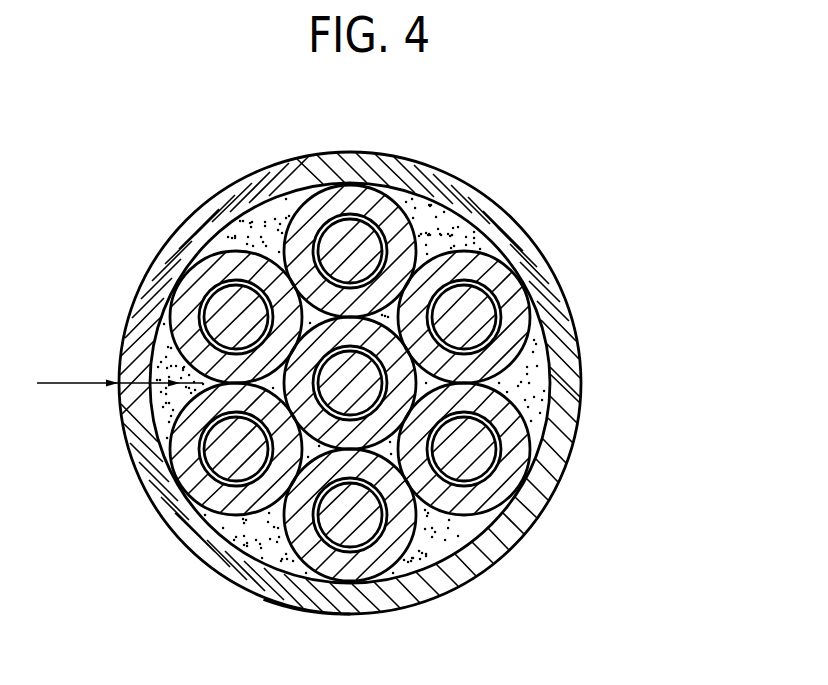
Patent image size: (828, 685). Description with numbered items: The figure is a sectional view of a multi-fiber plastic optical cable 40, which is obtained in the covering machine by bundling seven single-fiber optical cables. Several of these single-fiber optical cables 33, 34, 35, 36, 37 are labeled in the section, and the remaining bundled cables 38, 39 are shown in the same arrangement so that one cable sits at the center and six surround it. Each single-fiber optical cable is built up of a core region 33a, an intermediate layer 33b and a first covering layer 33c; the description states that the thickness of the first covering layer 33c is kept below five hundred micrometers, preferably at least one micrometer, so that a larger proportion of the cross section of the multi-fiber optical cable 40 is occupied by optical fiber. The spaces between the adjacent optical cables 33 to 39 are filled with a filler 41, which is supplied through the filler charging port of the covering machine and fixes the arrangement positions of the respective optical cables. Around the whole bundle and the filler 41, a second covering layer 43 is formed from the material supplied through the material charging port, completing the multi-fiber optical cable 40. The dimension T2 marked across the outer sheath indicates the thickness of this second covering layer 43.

The multi-fiber plastic optical cable 40 is at (558, 207).
The second covering layer 43 is at (563, 437).
The single-fiber optical cable 34 is at (508, 542).
The single-fiber optical cable 37 is at (288, 607).
The filler 41 is at (413, 550).
The single-fiber optical cable 36 is at (423, 228).
The single-fiber optical cable 35 is at (350, 243).
The insulated wire 38 is at (207, 274).
The insulated wire 39 is at (190, 490).
The single-fiber optical cable 33 is at (553, 335).
The conductor 33a is at (541, 301).
The insulation layer 33b is at (490, 345).
The first covering layer 33c is at (503, 353).
The jacket thickness T2 is at (120, 362).